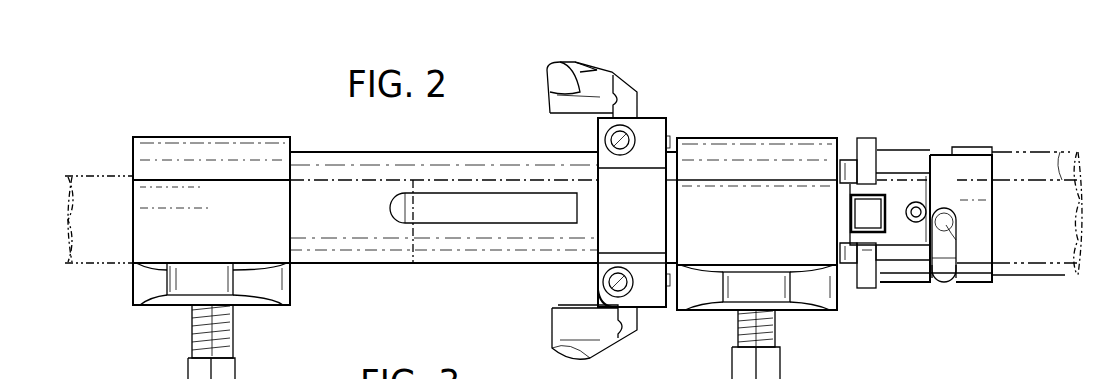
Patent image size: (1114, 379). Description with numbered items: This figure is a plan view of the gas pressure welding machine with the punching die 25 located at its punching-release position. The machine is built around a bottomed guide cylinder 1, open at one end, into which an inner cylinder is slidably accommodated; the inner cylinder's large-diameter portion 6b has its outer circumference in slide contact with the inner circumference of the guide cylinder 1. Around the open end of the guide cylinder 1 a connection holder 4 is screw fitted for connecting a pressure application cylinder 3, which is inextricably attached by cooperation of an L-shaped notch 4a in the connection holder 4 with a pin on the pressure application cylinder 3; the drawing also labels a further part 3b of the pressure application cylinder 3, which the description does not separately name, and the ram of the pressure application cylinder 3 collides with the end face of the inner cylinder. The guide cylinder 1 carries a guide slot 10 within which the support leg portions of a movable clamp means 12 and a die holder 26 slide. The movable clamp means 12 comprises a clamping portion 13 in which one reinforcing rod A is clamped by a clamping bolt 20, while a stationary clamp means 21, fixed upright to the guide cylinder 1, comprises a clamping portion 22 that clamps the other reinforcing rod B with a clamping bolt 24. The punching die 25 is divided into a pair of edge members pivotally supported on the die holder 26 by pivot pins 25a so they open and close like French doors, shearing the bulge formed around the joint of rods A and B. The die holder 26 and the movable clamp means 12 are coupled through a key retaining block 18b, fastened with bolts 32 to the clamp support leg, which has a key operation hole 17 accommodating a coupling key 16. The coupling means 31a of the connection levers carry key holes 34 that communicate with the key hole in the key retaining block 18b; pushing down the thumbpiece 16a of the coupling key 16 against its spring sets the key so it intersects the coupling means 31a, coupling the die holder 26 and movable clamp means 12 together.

The guide cylinder 1 is at (485, 253).
The pressure application cylinder 3 is at (1052, 275).
The latch pin 3b is at (957, 263).
The connection holder 4 is at (973, 150).
The L-shaped notch 4a is at (940, 262).
The large-diameter portion 6b is at (470, 200).
The guide slot 10 is at (434, 216).
The movable clamp means 12 is at (740, 138).
The clamping portion 13 is at (807, 292).
The coupling key 16 is at (866, 205).
The thumbpiece 16a is at (866, 290).
The key operation hole 17 is at (890, 208).
The key retaining block 18b is at (900, 262).
The clamping bolt 20 is at (778, 360).
The stationary clamp means 21 is at (213, 137).
The clamping portion 22 is at (258, 248).
The clamping bolt 24 is at (234, 366).
The punching die 25 is at (588, 83).
The pivot pins 25a is at (632, 130).
The die holder 26 is at (632, 290).
The coupling means 31a is at (895, 175).
The bolts 32 is at (827, 160).
The key holes 34 is at (886, 180).
The reinforcing rod A is at (523, 248).
The reinforcing rod B is at (104, 262).